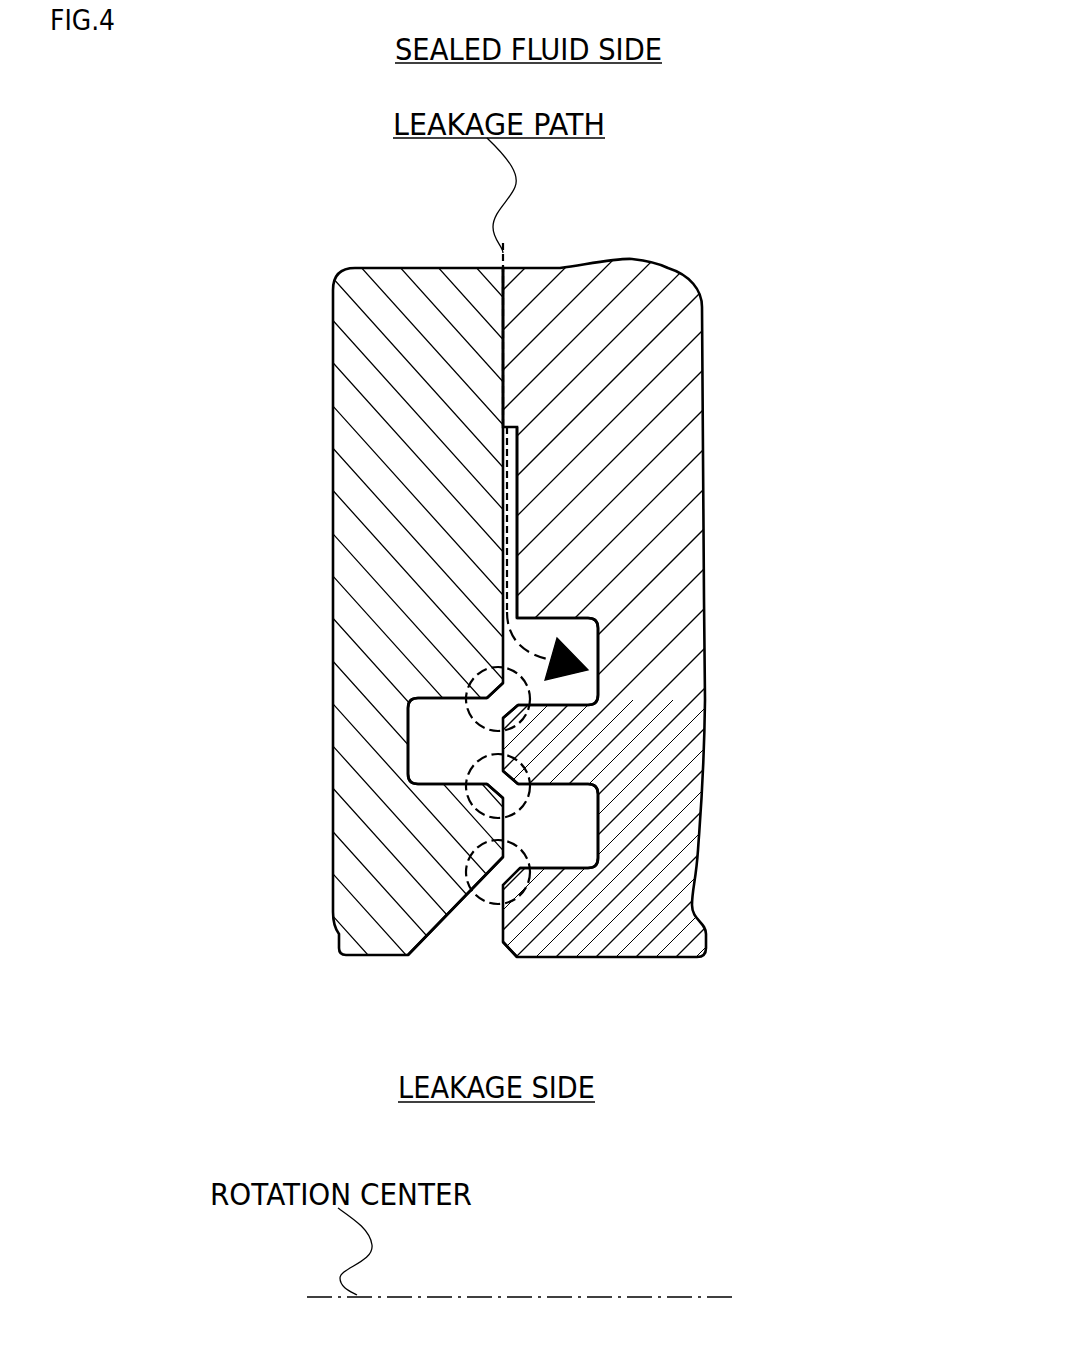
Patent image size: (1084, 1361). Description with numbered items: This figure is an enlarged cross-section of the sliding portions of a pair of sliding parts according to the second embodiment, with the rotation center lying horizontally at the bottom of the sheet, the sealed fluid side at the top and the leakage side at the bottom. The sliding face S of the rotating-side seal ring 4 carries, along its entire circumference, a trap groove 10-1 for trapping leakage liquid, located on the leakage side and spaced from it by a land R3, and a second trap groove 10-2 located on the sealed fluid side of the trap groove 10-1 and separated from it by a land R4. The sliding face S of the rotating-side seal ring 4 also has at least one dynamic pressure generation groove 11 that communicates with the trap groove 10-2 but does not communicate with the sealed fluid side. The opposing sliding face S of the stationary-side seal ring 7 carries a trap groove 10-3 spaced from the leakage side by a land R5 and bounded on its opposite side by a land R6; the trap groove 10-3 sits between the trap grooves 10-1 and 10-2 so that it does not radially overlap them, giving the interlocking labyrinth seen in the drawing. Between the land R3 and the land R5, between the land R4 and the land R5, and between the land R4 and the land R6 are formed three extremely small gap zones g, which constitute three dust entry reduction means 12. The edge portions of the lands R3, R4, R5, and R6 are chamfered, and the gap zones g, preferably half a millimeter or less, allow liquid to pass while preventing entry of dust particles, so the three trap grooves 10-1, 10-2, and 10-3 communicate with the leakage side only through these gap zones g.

The stationary-side seal ring 7 is at (358, 267).
The rotating-side seal ring 4 is at (623, 283).
The sliding face S is at (502, 450).
The dynamic pressure generation groove 11 is at (517, 517).
The trap groove 10-1 is at (600, 817).
The trap groove 10-2 is at (600, 626).
The trap groove 10-3 is at (418, 740).
The dust entry reduction means 12 is at (495, 680).
The land R3 is at (498, 944).
The land R4 is at (511, 753).
The land R5 is at (466, 880).
The land R6 is at (500, 632).
The extremely small gap zone g is at (502, 722).